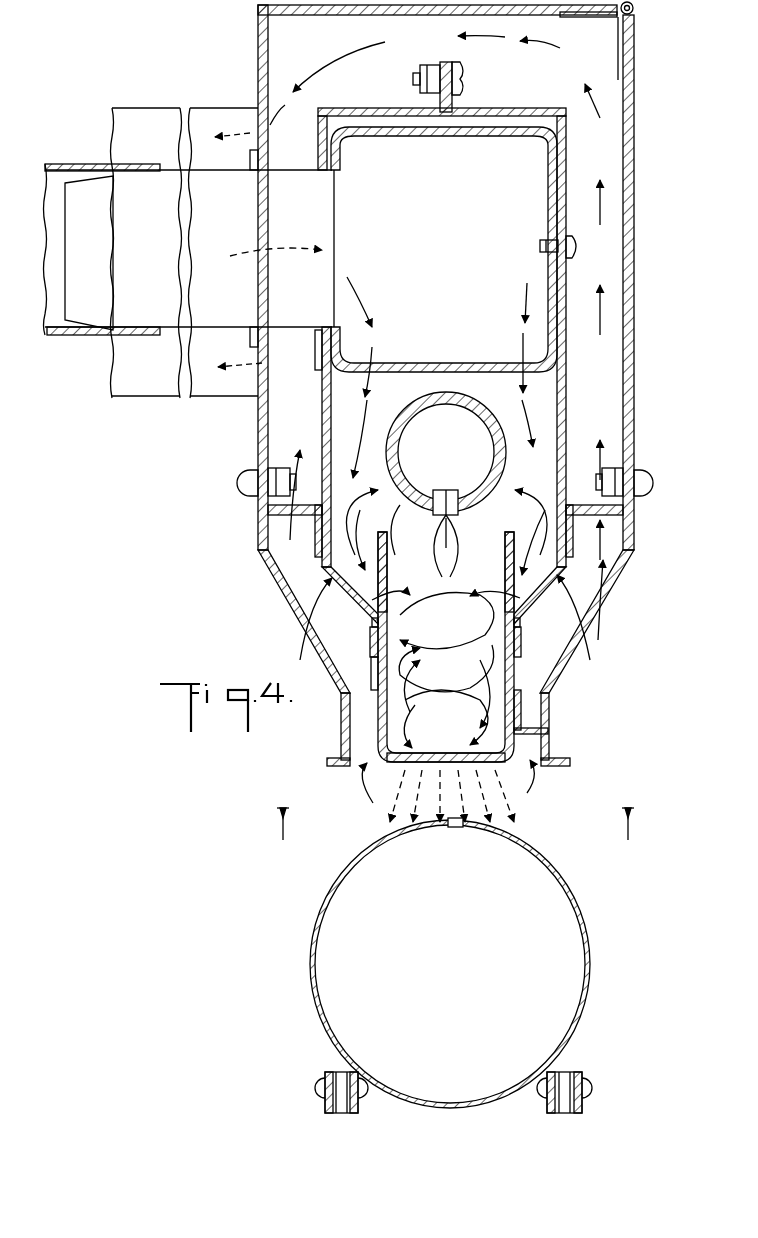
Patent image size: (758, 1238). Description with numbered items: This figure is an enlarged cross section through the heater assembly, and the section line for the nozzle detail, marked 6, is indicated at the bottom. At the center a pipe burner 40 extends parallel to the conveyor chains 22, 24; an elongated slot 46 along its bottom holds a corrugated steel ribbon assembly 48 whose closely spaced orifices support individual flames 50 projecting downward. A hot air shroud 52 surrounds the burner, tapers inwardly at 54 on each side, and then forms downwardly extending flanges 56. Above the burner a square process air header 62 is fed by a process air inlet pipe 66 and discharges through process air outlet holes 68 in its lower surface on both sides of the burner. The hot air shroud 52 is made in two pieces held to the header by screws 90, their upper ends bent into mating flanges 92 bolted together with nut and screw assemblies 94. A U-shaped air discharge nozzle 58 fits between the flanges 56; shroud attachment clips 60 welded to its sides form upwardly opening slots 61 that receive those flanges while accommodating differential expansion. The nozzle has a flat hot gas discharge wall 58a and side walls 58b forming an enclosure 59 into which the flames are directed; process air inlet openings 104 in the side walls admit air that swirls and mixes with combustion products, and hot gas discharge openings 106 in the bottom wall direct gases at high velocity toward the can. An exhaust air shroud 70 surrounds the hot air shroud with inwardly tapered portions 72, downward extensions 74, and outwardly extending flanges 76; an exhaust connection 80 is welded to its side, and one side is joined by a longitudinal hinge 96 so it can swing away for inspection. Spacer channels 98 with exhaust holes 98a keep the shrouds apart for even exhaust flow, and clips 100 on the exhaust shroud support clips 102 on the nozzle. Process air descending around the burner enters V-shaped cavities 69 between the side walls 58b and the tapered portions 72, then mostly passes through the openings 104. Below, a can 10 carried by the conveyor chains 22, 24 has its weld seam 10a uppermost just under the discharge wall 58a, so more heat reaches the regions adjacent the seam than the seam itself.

The can 10 is at (322, 895).
The weld seam 10a is at (452, 828).
The conveyor chain 22 is at (325, 1078).
The conveyor chain 24 is at (575, 1072).
The pipe burner 40 is at (486, 410).
The elongated slot 46 is at (438, 516).
The corrugated steel ribbon assembly 48 is at (455, 490).
The flames 50 is at (455, 556).
The hot air shroud 52 is at (575, 385).
The inwardly tapered portion of hot air shroud 54 is at (340, 600).
The downwardly extending flanges 56 is at (372, 623).
The air discharge nozzle 58 is at (515, 772).
The hot gas discharge wall 58a is at (452, 796).
The side walls 58b is at (504, 659).
The enclosure 59 is at (398, 530).
The shroud attachment clips 60 is at (380, 690).
The slots 61 is at (370, 642).
The process air header 62 is at (515, 126).
The process air inlet pipe 66 is at (95, 318).
The process air outlet holes 68 is at (372, 367).
The V-shaped cavities 69 is at (512, 515).
The exhaust air shroud 70 is at (258, 50).
The inwardly tapered portions 72 is at (300, 617).
The downward extensions 74 is at (341, 730).
The outwardly extending flanges 76 is at (330, 766).
The exhaust connection 80 is at (205, 118).
The screws 90 is at (553, 240).
The mating flanges 92 is at (442, 62).
The nut and screw assemblies 94 is at (458, 76).
The longitudinal hinge 96 is at (634, 12).
The spacer channels 98 is at (268, 508).
The exhaust holes 98a is at (305, 512).
The clips on exhaust shroud 100 is at (549, 740).
The clips on nozzle 102 is at (549, 718).
The process air inlet openings 104 is at (385, 582).
The hot gas discharge openings 106 is at (480, 756).
The section line 6 is at (452, 811).